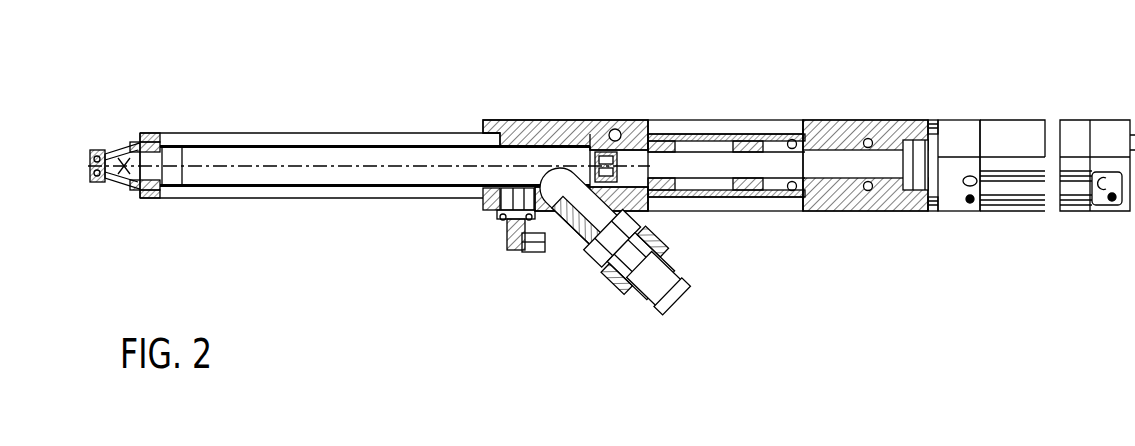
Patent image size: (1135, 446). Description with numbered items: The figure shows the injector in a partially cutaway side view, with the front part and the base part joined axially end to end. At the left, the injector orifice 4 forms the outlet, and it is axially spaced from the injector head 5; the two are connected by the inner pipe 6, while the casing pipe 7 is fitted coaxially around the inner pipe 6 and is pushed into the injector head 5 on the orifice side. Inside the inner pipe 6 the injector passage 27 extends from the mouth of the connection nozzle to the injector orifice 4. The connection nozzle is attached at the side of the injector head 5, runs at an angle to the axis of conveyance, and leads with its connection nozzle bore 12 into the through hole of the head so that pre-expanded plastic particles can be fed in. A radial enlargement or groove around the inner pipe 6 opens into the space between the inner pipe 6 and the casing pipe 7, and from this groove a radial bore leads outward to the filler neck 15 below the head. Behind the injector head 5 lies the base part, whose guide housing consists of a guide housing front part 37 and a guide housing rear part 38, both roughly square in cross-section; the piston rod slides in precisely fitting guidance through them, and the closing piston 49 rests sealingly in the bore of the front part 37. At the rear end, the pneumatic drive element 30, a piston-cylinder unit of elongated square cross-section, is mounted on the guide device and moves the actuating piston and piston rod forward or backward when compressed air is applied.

The injector orifice 4 is at (115, 126).
The injector head 5 is at (513, 108).
The inner pipe 6 is at (293, 144).
The casing pipe 7 is at (333, 134).
The connection nozzle bore 12 is at (580, 244).
The filler neck 15 is at (503, 255).
The injector passage 27 is at (355, 157).
The pneumatic drive element 30 is at (1013, 130).
The guide housing front part 37 is at (635, 121).
The guide housing rear part 38 is at (857, 122).
The closing piston 49 is at (593, 158).